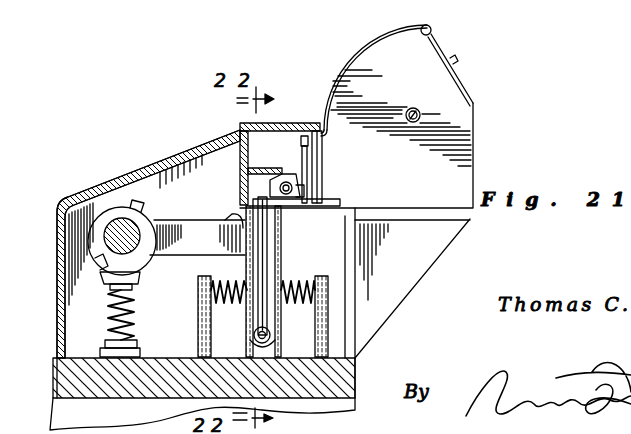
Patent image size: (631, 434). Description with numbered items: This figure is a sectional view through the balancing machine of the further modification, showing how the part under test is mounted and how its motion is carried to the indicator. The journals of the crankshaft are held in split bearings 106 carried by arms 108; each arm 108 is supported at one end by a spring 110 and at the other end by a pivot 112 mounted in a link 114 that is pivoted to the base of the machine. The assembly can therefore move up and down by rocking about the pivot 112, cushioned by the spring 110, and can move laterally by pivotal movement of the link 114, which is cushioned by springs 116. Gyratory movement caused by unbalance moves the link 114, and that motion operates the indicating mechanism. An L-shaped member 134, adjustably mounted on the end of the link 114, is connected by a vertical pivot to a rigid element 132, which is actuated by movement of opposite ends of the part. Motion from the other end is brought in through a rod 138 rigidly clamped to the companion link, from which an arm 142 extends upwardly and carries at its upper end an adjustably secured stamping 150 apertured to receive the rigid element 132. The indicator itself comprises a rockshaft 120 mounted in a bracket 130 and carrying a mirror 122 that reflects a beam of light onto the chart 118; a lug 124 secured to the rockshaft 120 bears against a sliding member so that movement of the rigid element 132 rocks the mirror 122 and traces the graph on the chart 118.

The split bearing 106 is at (107, 222).
The arm 108 is at (170, 222).
The spring 110 is at (112, 310).
The pivot 112 is at (244, 224).
The link 114 is at (246, 320).
The spring 116 is at (212, 295).
The chart 118 is at (365, 47).
The rockshaft 120 is at (318, 158).
The mirror 122 is at (309, 143).
The lug 124 is at (303, 182).
The bracket 130 is at (290, 155).
The rigid element 132 is at (289, 198).
The L-shaped member 134 is at (246, 183).
The rod 138 is at (255, 331).
The arm 142 is at (262, 272).
The stamping 150 is at (313, 200).